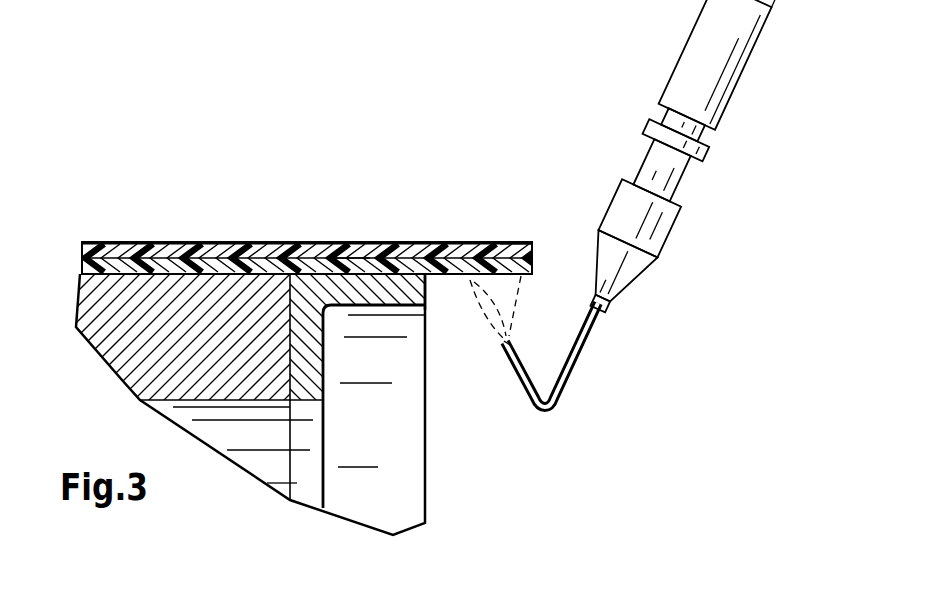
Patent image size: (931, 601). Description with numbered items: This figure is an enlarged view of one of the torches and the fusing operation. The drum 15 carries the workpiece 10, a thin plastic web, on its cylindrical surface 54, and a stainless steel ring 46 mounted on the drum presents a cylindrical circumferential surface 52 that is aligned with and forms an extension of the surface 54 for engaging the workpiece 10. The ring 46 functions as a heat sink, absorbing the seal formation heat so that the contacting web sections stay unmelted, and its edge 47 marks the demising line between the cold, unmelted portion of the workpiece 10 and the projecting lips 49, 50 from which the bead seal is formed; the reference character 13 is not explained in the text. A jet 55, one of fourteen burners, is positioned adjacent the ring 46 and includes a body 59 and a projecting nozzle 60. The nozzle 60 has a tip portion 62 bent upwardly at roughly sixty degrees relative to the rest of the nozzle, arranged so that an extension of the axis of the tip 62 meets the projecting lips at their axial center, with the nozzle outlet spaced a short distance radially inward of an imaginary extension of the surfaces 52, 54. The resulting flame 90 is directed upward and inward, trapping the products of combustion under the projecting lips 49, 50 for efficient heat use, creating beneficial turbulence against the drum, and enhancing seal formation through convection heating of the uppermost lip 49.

The workpiece 10 is at (270, 243).
The container 13 is at (285, 5).
The drum 15 is at (260, 438).
The ring 46 is at (305, 382).
The edge 47 is at (428, 276).
The projecting lip 49 is at (530, 242).
The projecting lip 50 is at (533, 262).
The cylindrical circumferential surface 52 is at (348, 245).
The cylindrical surface 54 is at (123, 247).
The jet 55 is at (711, 156).
The body 59 is at (737, 43).
The nozzle 60 is at (578, 355).
The tip portion 62 is at (518, 375).
The flame 90 is at (502, 292).